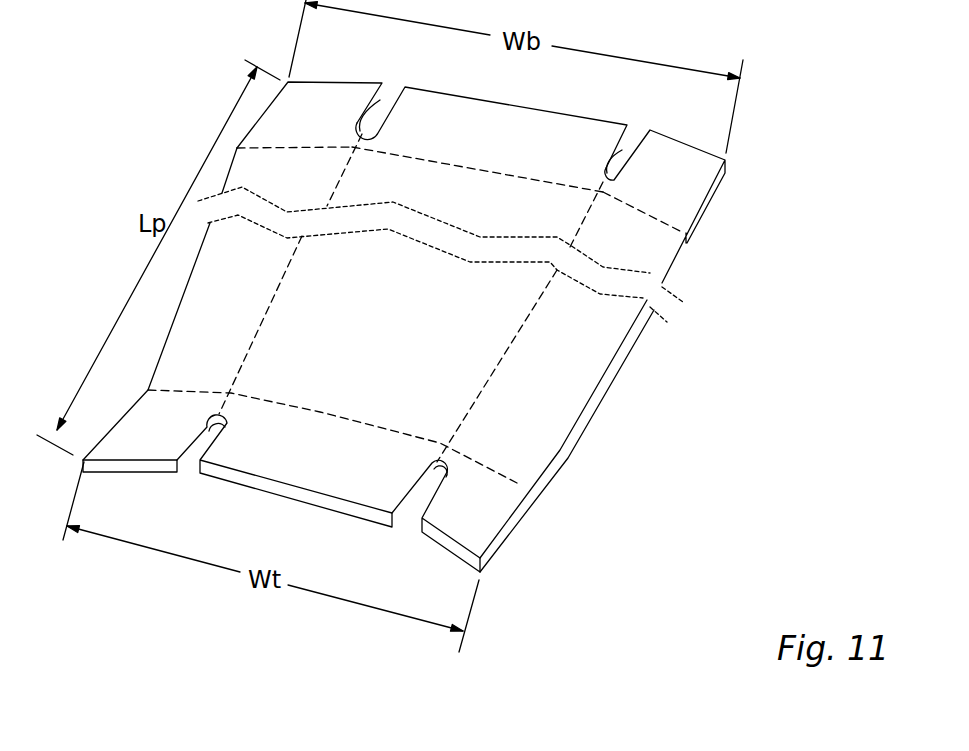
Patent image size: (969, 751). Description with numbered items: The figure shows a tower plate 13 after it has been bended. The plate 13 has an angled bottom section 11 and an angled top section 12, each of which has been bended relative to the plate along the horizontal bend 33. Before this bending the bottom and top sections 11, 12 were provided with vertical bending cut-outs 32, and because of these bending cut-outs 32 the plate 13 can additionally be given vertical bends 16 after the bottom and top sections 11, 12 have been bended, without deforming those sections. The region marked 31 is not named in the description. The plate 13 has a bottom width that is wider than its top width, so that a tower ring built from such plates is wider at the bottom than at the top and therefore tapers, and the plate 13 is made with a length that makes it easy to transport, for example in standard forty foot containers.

The bottom section 11 is at (300, 117).
The top section 12 is at (472, 503).
The tower plate 13 is at (437, 355).
The vertical bend 16 is at (527, 327).
The first side flap 31 is at (227, 300).
The bending cut-out 32 is at (620, 150).
The horizontal bend 33 is at (466, 160).